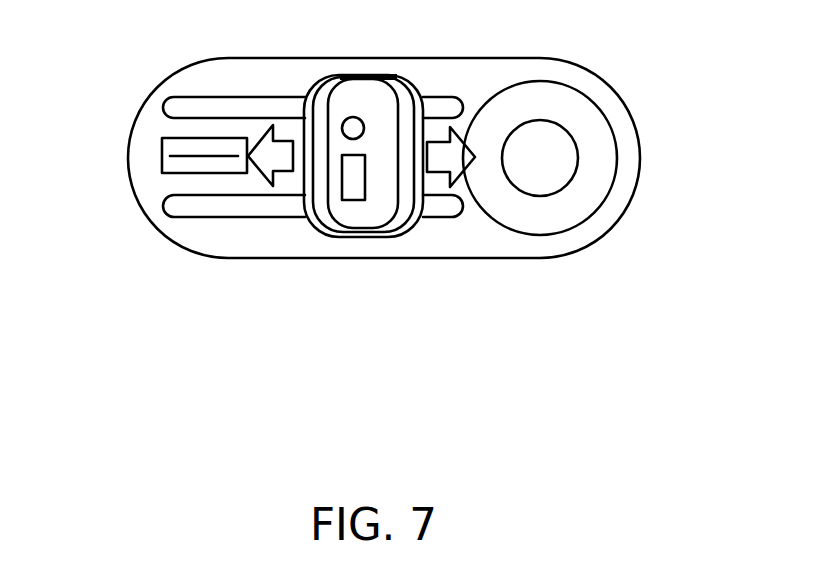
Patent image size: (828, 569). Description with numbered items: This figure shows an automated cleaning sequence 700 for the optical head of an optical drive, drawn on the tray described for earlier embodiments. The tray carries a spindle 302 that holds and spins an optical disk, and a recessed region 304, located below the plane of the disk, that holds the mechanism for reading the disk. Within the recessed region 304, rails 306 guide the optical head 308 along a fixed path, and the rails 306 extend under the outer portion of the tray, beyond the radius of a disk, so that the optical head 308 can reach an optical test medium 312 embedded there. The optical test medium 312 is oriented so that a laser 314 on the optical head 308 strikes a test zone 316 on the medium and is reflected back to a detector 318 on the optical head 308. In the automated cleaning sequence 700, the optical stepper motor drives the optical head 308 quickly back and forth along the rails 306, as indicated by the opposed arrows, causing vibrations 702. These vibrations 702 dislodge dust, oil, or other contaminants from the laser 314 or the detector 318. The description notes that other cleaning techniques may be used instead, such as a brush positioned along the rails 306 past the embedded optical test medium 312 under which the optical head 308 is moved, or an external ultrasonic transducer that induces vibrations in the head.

The spindle 302 is at (568, 86).
The recessed region 304 is at (263, 58).
The rails 306 is at (168, 203).
The optical head 308 is at (363, 75).
The optical test medium 312 is at (188, 173).
The laser 314 is at (354, 117).
The test zone 316 is at (217, 157).
The detector 318 is at (355, 200).
The automated cleaning sequence 700 is at (395, 487).
The vibrations 702 is at (447, 187).